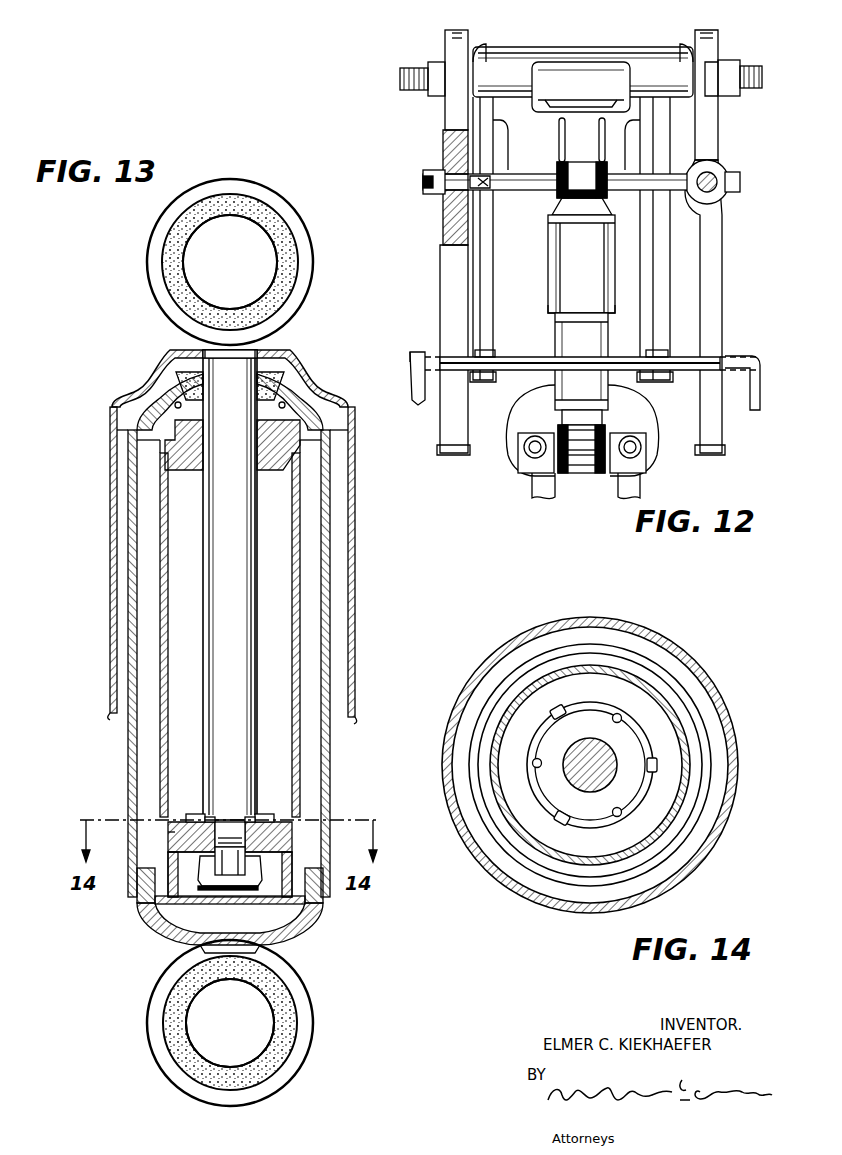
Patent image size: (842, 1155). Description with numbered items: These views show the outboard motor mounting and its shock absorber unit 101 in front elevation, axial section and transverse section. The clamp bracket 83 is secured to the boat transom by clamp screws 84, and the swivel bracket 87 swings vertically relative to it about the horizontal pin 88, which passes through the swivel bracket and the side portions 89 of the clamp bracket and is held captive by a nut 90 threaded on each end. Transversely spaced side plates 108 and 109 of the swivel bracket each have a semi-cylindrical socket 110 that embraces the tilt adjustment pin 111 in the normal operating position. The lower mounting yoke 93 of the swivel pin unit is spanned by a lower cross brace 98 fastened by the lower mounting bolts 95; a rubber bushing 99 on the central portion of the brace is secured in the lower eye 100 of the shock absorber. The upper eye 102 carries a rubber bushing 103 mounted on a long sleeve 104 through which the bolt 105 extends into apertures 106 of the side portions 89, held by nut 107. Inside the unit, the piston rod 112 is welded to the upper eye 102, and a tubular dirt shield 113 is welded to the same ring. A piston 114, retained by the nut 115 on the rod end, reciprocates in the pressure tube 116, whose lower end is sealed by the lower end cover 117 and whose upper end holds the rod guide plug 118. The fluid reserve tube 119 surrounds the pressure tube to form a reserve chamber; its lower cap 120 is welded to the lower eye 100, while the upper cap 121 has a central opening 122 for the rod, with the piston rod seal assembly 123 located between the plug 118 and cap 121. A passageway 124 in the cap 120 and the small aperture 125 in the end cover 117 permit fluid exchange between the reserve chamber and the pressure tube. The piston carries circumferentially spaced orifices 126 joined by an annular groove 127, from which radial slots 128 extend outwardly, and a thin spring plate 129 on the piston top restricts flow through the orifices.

In FIG. 12, the clamp bracket 83 is at (445, 48).
In FIG. 12, the clamp screws 84 is at (716, 193).
In FIG. 12, the swivel bracket 87 is at (647, 50).
In FIG. 12, the horizontal pin 88 is at (400, 79).
In FIG. 12, the side portions 89 is at (442, 290).
In FIG. 12, the nut 90 is at (432, 90).
In FIG. 12, the lower mounting yoke 93 is at (515, 455).
In FIG. 12, the lower mounting bolts 95 is at (535, 452).
In FIG. 12, the lower cross brace 98 is at (556, 462).
In FIG. 13, the rubber bushing 99 is at (272, 1042).
In FIG. 12, the rubber bushing 99 is at (596, 470).
In FIG. 13, the lower eye 100 is at (304, 1013).
In FIG. 12, the lower eye 100 is at (586, 468).
In FIG. 13, the shock absorber unit 101 is at (120, 965).
In FIG. 12, the shock absorber unit 101 is at (615, 280).
In FIG. 13, the upper eye 102 is at (258, 192).
In FIG. 12, the upper eye 102 is at (590, 221).
In FIG. 13, the rubber bushing 103 is at (276, 256).
In FIG. 12, the rubber bushing 103 is at (612, 192).
In FIG. 12, the long sleeve 104 is at (548, 190).
In FIG. 12, the bolt 105 is at (480, 188).
In FIG. 12, the apertures 106 is at (460, 182).
In FIG. 12, the nut 107 is at (430, 192).
In FIG. 12, the side plate 108 is at (490, 296).
In FIG. 12, the side plate 109 is at (670, 278).
In FIG. 12, the semi-cylindrical socket 110 is at (493, 357).
In FIG. 12, the tilt adjustment pin 111 is at (540, 371).
In FIG. 13, the piston rod 112 is at (205, 625).
In FIG. 13, the tubular dirt shield 113 is at (355, 605).
In FIG. 13, the piston 114 is at (292, 845).
In FIG. 14, the piston 114 is at (660, 812).
In FIG. 13, the nut 115 is at (170, 896).
In FIG. 13, the pressure tube 116 is at (298, 626).
In FIG. 14, the pressure tube 116 is at (540, 872).
In FIG. 13, the lower end cover 117 is at (270, 940).
In FIG. 14, the lower end cover 117 is at (492, 818).
In FIG. 13, the rod guide plug 118 is at (277, 466).
In FIG. 13, the fluid reserve tube 119 is at (328, 758).
In FIG. 14, the fluid reserve tube 119 is at (527, 636).
In FIG. 13, the cap 120 is at (323, 895).
In FIG. 14, the cap 120 is at (614, 907).
In FIG. 13, the cap 121 is at (305, 408).
In FIG. 13, the central opening 122 is at (205, 352).
In FIG. 13, the piston rod seal assembly 123 is at (178, 392).
In FIG. 13, the passageway 124 is at (283, 918).
In FIG. 13, the small aperture 125 is at (200, 918).
In FIG. 13, the orifices 126 is at (172, 834).
In FIG. 14, the orifices 126 is at (630, 692).
In FIG. 13, the annular groove 127 is at (258, 814).
In FIG. 14, the annular groove 127 is at (570, 820).
In FIG. 13, the radial slots 128 is at (256, 818).
In FIG. 14, the radial slots 128 is at (556, 708).
In FIG. 13, the spring plate 129 is at (203, 818).